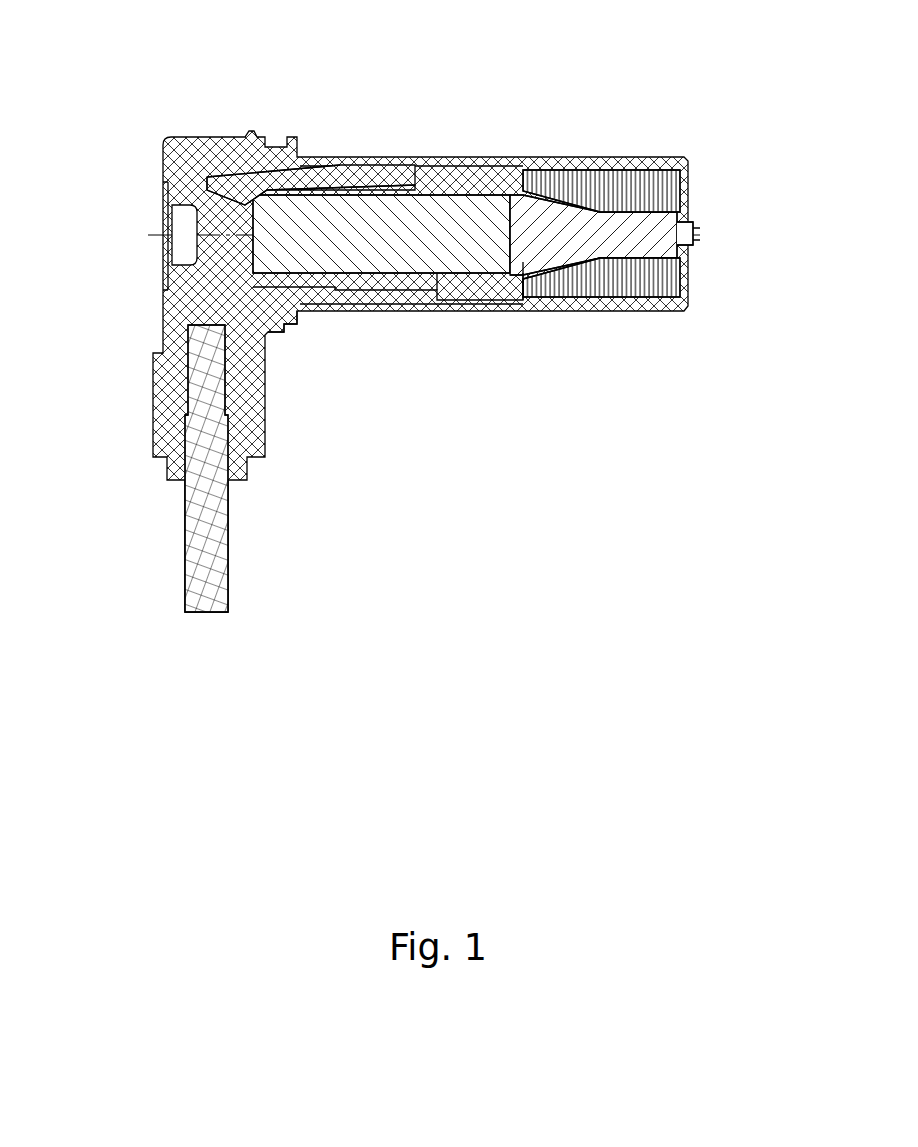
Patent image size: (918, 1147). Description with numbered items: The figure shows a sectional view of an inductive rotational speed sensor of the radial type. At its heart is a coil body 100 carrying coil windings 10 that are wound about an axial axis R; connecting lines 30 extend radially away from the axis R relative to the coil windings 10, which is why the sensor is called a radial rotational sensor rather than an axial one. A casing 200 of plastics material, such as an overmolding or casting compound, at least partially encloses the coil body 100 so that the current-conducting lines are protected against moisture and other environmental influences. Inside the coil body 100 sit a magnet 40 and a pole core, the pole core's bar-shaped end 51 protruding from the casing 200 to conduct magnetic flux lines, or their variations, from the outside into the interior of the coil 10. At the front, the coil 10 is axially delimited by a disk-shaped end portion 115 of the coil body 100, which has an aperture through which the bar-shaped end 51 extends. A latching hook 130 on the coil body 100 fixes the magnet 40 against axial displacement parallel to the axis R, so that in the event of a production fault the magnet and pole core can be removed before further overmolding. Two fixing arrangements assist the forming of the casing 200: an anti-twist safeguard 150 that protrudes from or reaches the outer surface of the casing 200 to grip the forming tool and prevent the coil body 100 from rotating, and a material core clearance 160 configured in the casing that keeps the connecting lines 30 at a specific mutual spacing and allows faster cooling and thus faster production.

The coil windings 10 is at (606, 190).
The connecting lines 30 is at (215, 565).
The magnet 40 is at (316, 262).
The bar-shaped end 51 is at (688, 232).
The coil body 100 is at (455, 287).
The disk-shaped end portion 115 is at (686, 275).
The latching hook 130 is at (228, 176).
The anti-twist safeguard 150 is at (347, 150).
The material core clearance 160 is at (165, 250).
The casing 200 is at (272, 303).
The axial axis R is at (459, 235).